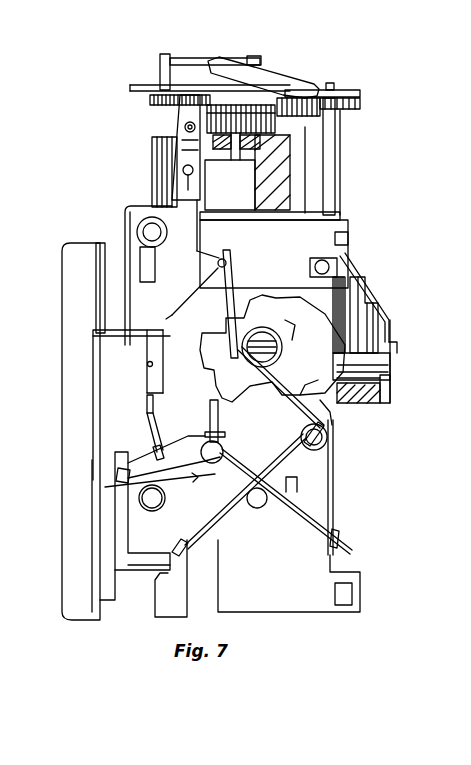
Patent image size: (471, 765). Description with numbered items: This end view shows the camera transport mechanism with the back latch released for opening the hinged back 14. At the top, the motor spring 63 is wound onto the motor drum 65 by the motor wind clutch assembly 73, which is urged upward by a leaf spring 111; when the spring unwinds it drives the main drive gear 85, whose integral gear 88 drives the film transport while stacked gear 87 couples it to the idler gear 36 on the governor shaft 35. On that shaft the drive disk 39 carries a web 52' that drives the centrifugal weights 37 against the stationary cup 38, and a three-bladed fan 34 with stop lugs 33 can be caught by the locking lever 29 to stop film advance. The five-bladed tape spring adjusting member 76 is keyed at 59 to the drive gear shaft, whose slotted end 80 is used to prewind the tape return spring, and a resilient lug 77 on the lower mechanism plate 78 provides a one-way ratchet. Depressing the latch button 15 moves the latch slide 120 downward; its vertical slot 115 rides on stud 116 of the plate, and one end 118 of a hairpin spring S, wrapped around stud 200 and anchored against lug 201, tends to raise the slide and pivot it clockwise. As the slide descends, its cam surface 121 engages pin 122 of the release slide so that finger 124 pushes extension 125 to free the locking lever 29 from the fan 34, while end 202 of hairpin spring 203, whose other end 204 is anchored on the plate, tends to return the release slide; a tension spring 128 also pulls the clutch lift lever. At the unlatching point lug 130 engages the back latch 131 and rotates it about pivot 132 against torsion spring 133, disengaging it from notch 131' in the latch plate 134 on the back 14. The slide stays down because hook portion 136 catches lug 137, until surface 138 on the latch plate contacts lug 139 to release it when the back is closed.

The leaf spring 111 is at (284, 80).
The main drive gear 85 is at (150, 101).
The idler gear 36 is at (360, 104).
The tension spring 128 is at (178, 135).
The stacked gear 87 is at (322, 110).
The gear 88 is at (270, 125).
The motor spring 63 is at (152, 165).
The shaft 35 is at (336, 155).
The motor wind clutch assembly 73 is at (247, 171).
The motor drum 65 is at (276, 208).
The stud 116 is at (148, 233).
The fan 34 is at (364, 278).
The pin 122 is at (218, 265).
The end of hairpin spring 202 is at (232, 270).
The finger 124 is at (370, 302).
The vertical slot 115 is at (148, 282).
The hinged back 14 is at (72, 299).
The cam surface 121 is at (194, 298).
The key 59 is at (263, 328).
The slotted end 80 is at (277, 337).
The tape spring adjusting member 76 is at (207, 337).
The extension 125 is at (392, 326).
The stop lug 33 is at (388, 348).
The surface 138 is at (147, 364).
The latch plate 134 is at (131, 405).
The lug 77 is at (365, 360).
The locking lever 29 is at (365, 365).
The drive disk 39 is at (367, 377).
The pivot 132 is at (210, 408).
The lug 139 is at (153, 399).
The hairpin spring 203 is at (278, 392).
The web 52' is at (315, 393).
The stationary cup 38 is at (382, 392).
The centrifugal weights 37 is at (385, 403).
The latch slide 120 is at (153, 447).
The lower mechanism plate 78 is at (330, 406).
The lug 130 is at (148, 448).
The end of hairpin spring 204 is at (331, 436).
The stud 200 is at (337, 455).
The notch 131' is at (78, 465).
The hairpin spring S is at (334, 470).
The latch button 15 is at (165, 499).
The back latch 131 is at (169, 486).
The end of hairpin spring 118 is at (218, 512).
The torsion spring 133 is at (294, 507).
The lug 201 is at (338, 530).
The lug 137 is at (128, 568).
The hook portion 136 is at (162, 585).